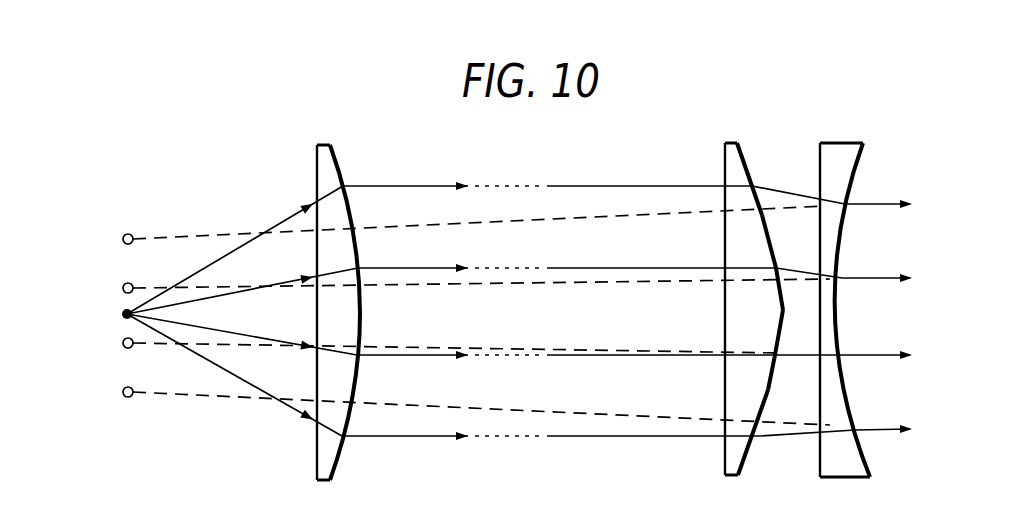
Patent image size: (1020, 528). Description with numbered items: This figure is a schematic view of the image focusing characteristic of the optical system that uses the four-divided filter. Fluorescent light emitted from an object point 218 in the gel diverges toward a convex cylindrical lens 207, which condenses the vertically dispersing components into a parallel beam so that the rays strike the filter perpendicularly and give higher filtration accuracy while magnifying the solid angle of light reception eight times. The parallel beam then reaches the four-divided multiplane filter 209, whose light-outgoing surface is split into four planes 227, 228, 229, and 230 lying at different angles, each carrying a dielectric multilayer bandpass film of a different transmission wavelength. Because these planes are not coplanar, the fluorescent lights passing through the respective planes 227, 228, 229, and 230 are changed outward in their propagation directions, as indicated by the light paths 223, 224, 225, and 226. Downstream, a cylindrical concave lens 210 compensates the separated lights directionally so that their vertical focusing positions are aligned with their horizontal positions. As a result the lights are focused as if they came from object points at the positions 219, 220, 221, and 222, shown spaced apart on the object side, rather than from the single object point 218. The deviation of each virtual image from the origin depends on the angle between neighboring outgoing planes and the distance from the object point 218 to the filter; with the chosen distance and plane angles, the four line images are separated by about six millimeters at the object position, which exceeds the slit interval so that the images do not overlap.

The convex cylindrical lens 207 is at (325, 143).
The four-divided multiplane filter 209 is at (731, 142).
The cylindrical concave lens 210 is at (848, 148).
The object point 218 is at (122, 314).
The virtual object point position 219 is at (123, 239).
The virtual object point position 220 is at (123, 288).
The virtual object point position 221 is at (123, 343).
The virtual object point position 222 is at (123, 392).
The light path 223 is at (886, 202).
The light path 224 is at (886, 277).
The light path 225 is at (889, 354).
The light path 226 is at (889, 431).
The light-outgoing plane 227 is at (757, 166).
The light-outgoing plane 228 is at (778, 261).
The light-outgoing plane 229 is at (778, 369).
The light-outgoing plane 230 is at (749, 449).